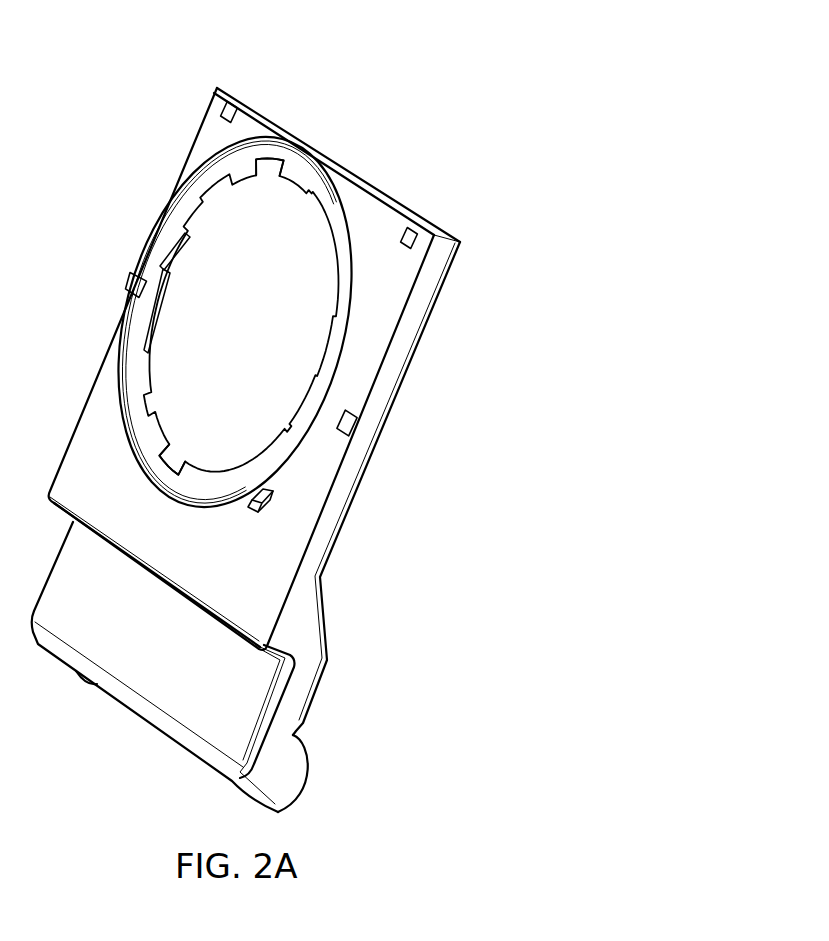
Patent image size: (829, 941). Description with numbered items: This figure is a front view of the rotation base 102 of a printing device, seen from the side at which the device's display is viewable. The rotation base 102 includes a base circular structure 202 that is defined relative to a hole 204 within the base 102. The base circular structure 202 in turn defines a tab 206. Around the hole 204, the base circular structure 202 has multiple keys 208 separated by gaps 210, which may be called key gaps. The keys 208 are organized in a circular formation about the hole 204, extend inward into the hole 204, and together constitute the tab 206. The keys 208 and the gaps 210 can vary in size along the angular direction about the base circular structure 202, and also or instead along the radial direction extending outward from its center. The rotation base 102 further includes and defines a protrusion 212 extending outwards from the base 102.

The rotation base 102 is at (195, 66).
The base circular structure 202 is at (179, 197).
The hole 204 is at (262, 374).
The tab 206 is at (250, 202).
The keys 208 is at (160, 287).
The gaps 210 is at (174, 464).
The protrusion 212 is at (274, 490).